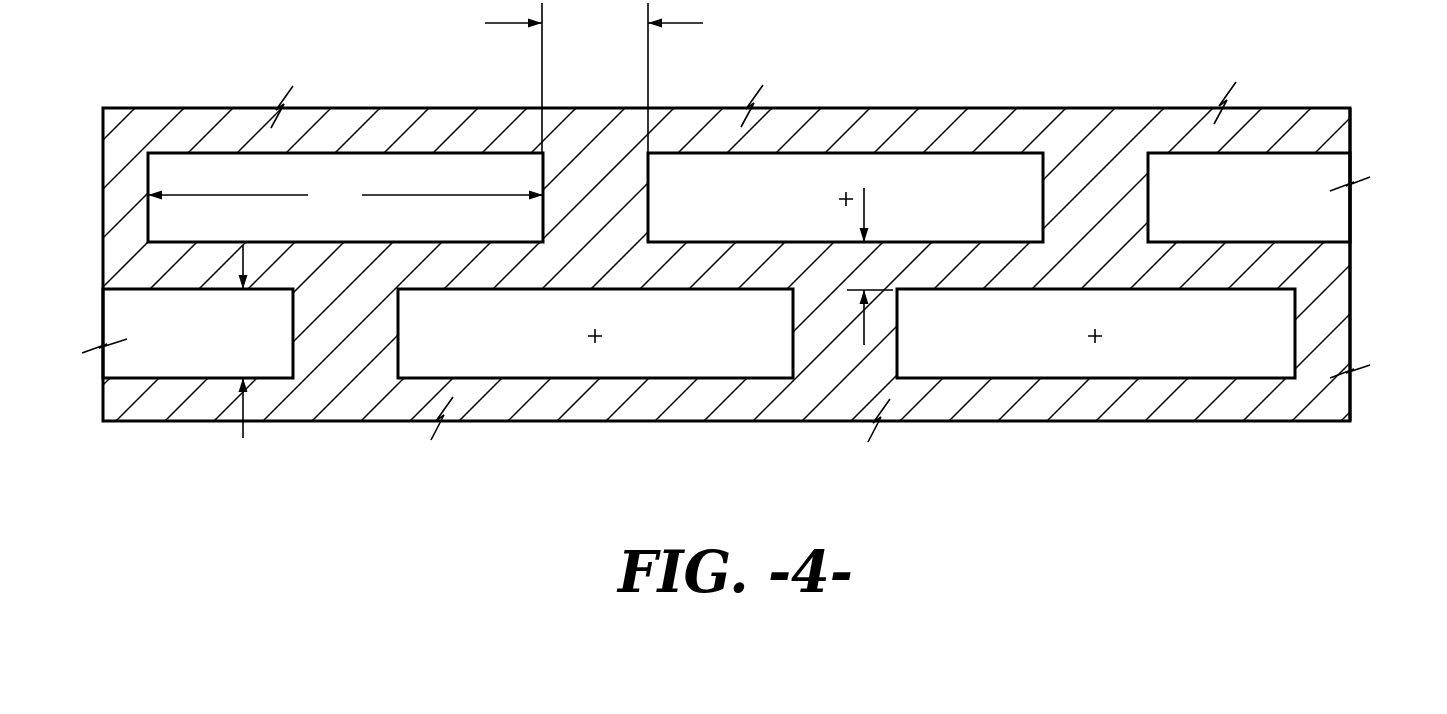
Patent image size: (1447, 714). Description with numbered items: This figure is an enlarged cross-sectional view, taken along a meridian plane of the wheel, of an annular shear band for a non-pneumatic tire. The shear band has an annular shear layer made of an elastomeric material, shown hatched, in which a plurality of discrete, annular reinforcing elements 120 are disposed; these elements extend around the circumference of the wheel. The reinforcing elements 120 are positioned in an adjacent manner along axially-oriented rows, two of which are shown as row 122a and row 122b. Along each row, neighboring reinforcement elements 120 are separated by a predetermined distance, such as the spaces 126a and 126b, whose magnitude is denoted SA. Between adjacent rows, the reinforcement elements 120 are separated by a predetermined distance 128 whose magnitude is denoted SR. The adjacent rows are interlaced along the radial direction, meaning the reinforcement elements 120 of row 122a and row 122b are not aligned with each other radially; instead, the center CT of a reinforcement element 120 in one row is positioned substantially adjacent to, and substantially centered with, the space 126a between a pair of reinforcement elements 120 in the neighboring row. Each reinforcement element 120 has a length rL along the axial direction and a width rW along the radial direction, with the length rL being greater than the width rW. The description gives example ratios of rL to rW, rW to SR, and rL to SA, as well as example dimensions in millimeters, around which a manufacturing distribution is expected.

The reinforcing elements 120 is at (218, 168).
The axially-oriented row 122a is at (1367, 202).
The axially-oriented row 122b is at (1307, 329).
The space between reinforcement elements 126a is at (597, 150).
The space between reinforcement elements 126b is at (343, 360).
The predetermined distance between rows 128 is at (150, 262).
The center of reinforcement element CT is at (838, 190).
The axial spacing magnitude SA is at (594, 77).
The radial spacing magnitude SR is at (870, 266).
The reinforcement element length rL is at (345, 193).
The reinforcement element width rW is at (247, 341).